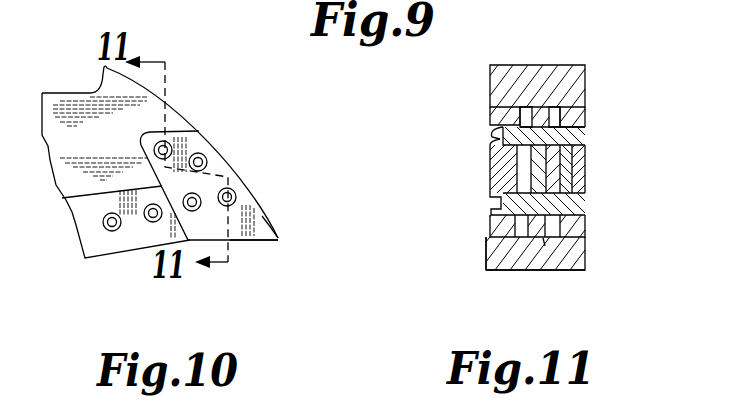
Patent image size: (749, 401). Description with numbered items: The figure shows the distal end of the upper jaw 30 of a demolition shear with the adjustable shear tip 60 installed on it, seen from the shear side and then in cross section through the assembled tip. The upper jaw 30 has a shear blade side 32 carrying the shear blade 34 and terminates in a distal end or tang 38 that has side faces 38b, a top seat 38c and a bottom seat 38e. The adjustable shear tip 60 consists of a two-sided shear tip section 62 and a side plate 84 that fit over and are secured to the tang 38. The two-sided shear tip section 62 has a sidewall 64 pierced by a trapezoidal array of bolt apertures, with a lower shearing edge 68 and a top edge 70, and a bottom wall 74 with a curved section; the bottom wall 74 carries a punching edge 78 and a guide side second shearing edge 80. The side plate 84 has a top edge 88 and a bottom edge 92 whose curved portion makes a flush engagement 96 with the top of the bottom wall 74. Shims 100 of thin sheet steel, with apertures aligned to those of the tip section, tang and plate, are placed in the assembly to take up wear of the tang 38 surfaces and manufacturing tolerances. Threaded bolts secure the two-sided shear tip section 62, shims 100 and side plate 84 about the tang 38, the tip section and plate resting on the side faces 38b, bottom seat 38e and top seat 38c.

In FIG. 10, the upper jaw 30 is at (82, 32).
In FIG. 10, the shear blade side 32 is at (141, 150).
In FIG. 10, the shear blade 34 is at (92, 212).
In FIG. 10, the adjustable shear tip 60 is at (228, 175).
In FIG. 11, the adjustable shear tip 60 is at (433, 287).
In FIG. 10, the two-sided shear tip section 62 is at (228, 175).
In FIG. 11, the two-sided shear tip section 62 is at (433, 287).
In FIG. 10, the sidewall 64 is at (248, 207).
In FIG. 11, the sidewall 64 is at (486, 245).
In FIG. 10, the lower shearing edge 68 is at (255, 241).
In FIG. 11, the lower shearing edge 68 is at (486, 270).
In FIG. 10, the bottom wall 74 is at (304, 238).
In FIG. 11, the bottom wall 74 is at (533, 293).
In FIG. 10, the punching edge 78 is at (280, 240).
In FIG. 11, the punching edge 78 is at (522, 271).
In FIG. 11, the top edge 70 is at (511, 66).
In FIG. 11, the tang 38 is at (586, 157).
In FIG. 11, the side faces 38b is at (494, 136).
In FIG. 11, the top seat 38c is at (490, 115).
In FIG. 11, the bottom seat 38e is at (543, 238).
In FIG. 11, the shims 100 is at (491, 163).
In FIG. 11, the side plate 84 is at (623, 84).
In FIG. 11, the top edge 88 is at (586, 84).
In FIG. 11, the bottom edge 92 is at (593, 231).
In FIG. 11, the flush engagement 96 is at (586, 240).
In FIG. 11, the guide side second shearing edge 80 is at (586, 270).